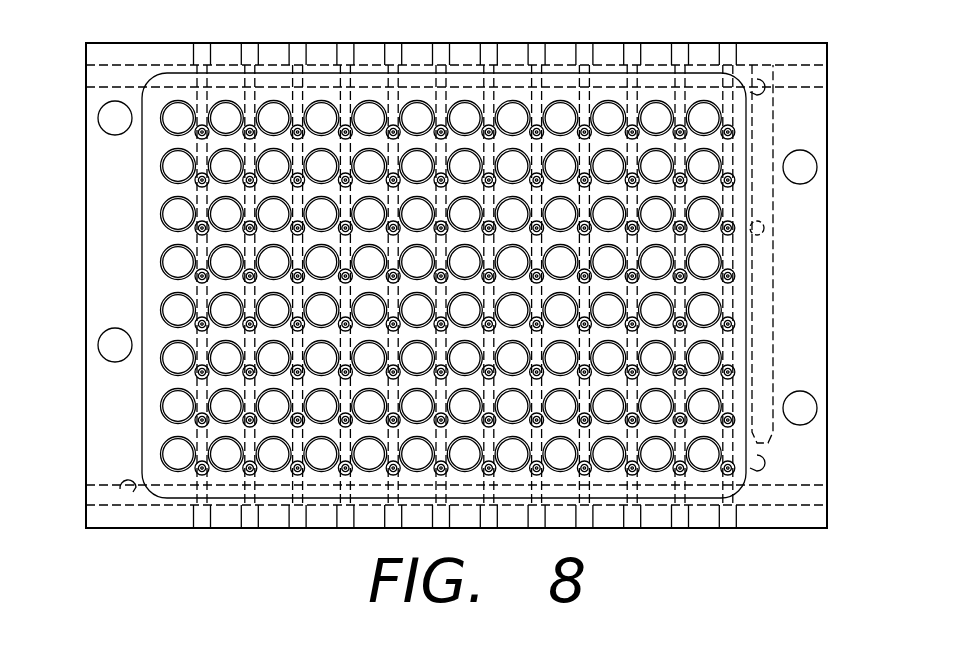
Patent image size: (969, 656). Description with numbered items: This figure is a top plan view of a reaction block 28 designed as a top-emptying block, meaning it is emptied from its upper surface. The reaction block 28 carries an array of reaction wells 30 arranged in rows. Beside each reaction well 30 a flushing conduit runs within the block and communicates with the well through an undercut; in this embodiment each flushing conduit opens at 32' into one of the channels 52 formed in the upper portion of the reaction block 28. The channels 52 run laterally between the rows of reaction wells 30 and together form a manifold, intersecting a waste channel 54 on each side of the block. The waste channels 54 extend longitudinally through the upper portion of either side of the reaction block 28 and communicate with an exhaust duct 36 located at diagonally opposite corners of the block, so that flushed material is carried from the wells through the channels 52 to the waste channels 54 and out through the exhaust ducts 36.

The reaction block 28 is at (828, 214).
The reaction wells 30 is at (166, 277).
The opening of flushing conduit 32' is at (455, 300).
The exhaust duct 36 is at (103, 113).
The channels 52 is at (580, 80).
The waste channel 54 is at (790, 70).